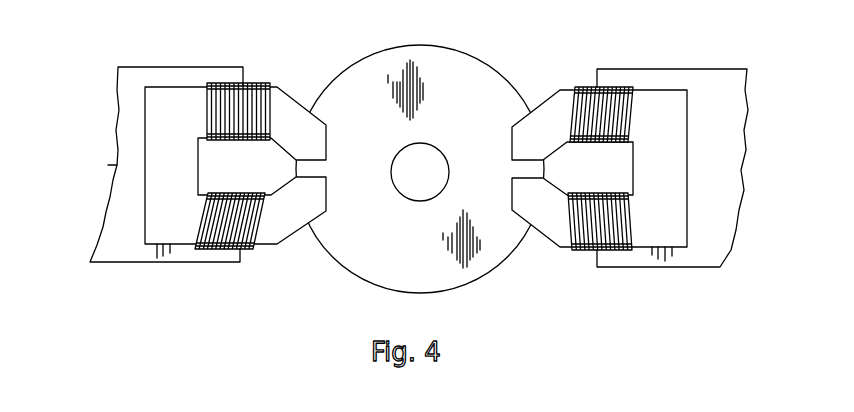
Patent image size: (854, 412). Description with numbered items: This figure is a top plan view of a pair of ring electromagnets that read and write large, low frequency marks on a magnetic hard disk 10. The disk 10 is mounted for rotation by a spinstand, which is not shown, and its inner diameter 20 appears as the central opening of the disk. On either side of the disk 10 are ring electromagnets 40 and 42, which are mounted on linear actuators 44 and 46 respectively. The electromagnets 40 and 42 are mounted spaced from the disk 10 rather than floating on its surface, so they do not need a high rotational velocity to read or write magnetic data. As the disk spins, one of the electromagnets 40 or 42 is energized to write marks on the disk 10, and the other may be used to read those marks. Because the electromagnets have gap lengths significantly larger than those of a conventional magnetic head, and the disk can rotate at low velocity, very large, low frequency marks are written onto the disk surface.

The magnetic hard disk 10 is at (490, 72).
The inner diameter 20 is at (413, 193).
The ring electromagnet 40 is at (172, 97).
The ring electromagnet 42 is at (653, 98).
The linear actuator 44 is at (118, 165).
The linear actuator 46 is at (718, 205).